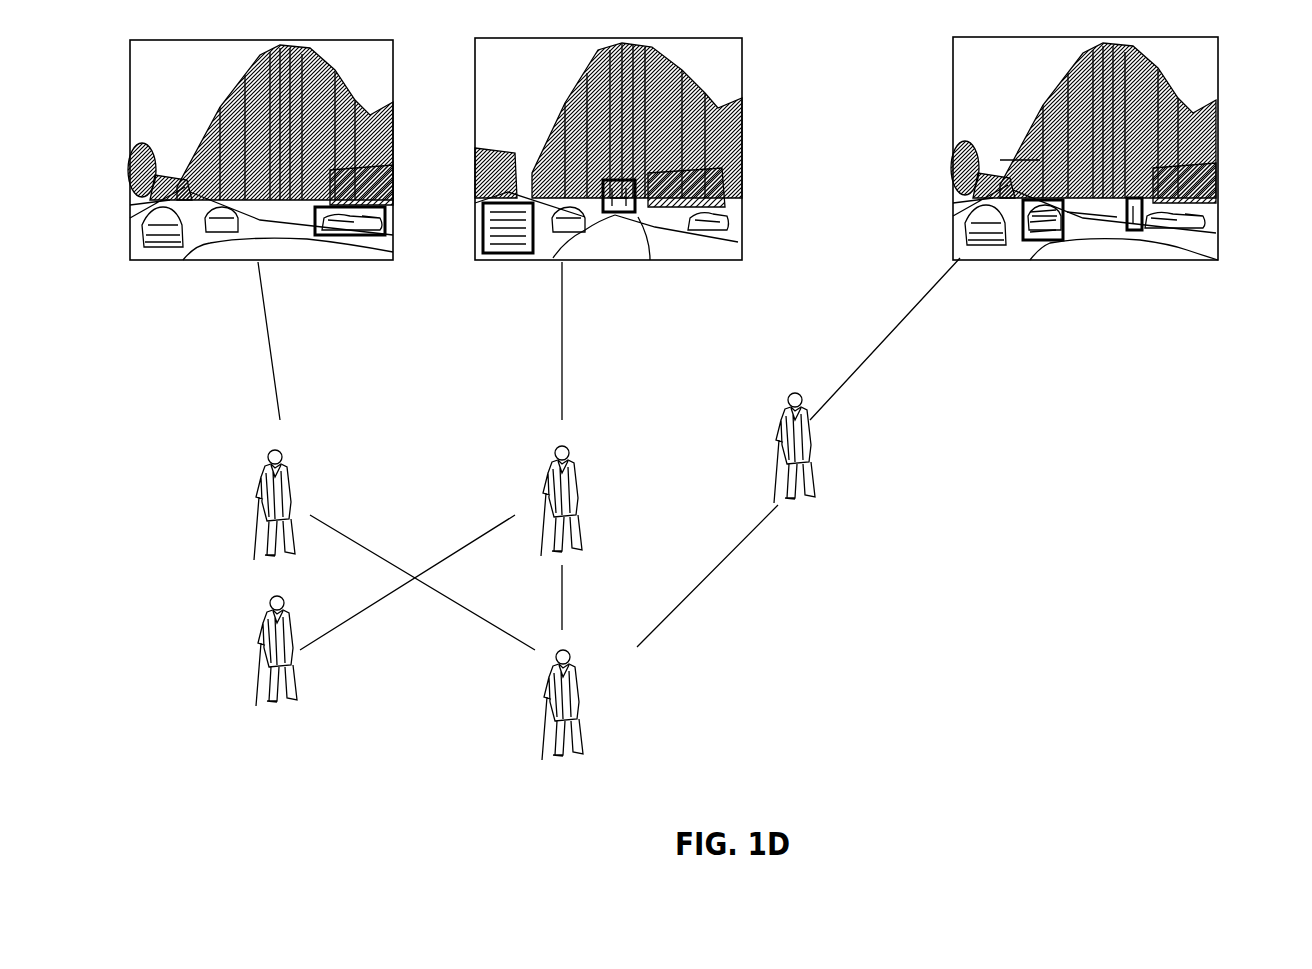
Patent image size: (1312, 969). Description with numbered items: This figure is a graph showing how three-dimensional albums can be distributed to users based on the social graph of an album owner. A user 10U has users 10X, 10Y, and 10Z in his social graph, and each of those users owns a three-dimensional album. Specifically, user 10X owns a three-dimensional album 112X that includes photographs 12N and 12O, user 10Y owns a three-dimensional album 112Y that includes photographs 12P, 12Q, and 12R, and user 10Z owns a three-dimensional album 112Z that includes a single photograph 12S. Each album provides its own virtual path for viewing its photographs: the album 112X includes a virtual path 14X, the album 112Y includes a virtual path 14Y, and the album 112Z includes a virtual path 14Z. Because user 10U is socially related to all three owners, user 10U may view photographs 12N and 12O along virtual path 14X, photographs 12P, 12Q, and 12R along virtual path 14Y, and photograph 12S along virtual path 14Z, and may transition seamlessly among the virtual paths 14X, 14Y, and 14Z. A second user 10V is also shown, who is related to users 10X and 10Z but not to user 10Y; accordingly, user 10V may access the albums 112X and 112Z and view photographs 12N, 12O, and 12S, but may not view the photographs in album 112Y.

The 3D album 112Z is at (393, 162).
The 3D album 112X is at (742, 162).
The 3D album 112Y is at (1218, 162).
The virtual path 14Z is at (211, 258).
The virtual path 14X is at (570, 260).
The virtual path 14Y is at (1085, 262).
The photograph 12S is at (343, 236).
The photograph 12N is at (500, 254).
The photograph 12O is at (625, 214).
The photograph 12P is at (1003, 160).
The photograph 12Q is at (1033, 241).
The photograph 12R is at (1134, 231).
The user 10Z is at (252, 510).
The user 10V is at (305, 685).
The user 10X is at (580, 487).
The user 10U is at (582, 697).
The user 10Y is at (817, 453).